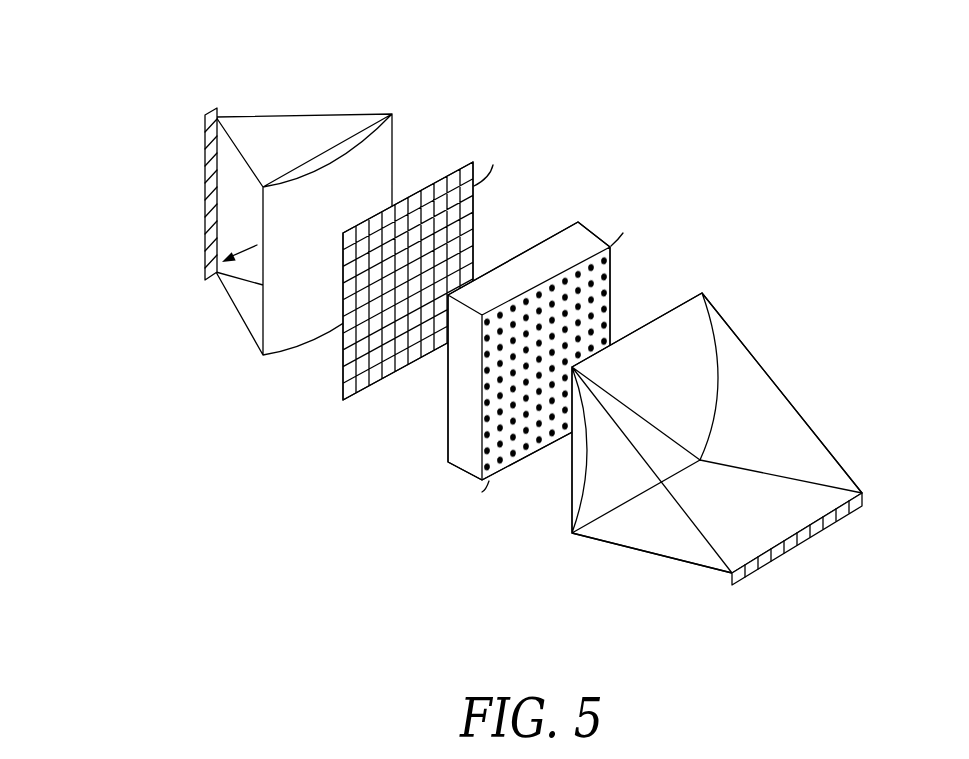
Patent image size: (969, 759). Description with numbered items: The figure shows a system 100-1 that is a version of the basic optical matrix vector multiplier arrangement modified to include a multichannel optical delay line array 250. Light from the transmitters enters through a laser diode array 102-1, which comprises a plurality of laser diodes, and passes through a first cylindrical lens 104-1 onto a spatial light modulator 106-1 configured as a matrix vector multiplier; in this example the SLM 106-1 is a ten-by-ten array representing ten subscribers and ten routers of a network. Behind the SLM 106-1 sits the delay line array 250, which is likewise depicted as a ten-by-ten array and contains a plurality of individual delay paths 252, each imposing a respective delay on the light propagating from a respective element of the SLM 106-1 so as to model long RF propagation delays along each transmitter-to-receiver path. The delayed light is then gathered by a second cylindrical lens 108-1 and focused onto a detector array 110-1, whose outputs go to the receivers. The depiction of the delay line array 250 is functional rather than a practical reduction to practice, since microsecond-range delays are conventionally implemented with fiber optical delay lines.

The system 100-1 is at (756, 71).
The laser diode array 102-1 is at (192, 131).
The first cylindrical lens 104-1 is at (410, 122).
The spatial light modulator (SLM) 106-1 is at (522, 147).
The multichannel optical delay line array 250 is at (534, 356).
The individual delay path 252 is at (363, 487).
The second cylindrical lens 108-1 is at (731, 426).
The detector array 110-1 is at (748, 594).